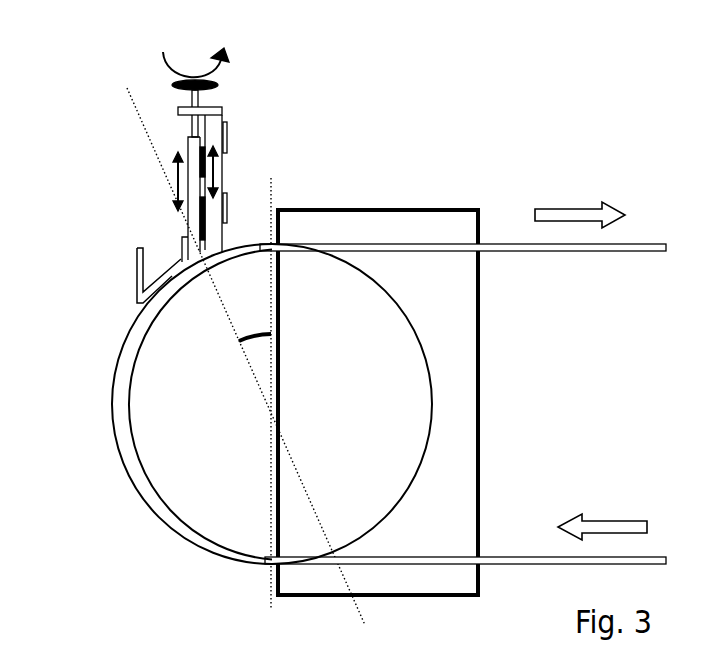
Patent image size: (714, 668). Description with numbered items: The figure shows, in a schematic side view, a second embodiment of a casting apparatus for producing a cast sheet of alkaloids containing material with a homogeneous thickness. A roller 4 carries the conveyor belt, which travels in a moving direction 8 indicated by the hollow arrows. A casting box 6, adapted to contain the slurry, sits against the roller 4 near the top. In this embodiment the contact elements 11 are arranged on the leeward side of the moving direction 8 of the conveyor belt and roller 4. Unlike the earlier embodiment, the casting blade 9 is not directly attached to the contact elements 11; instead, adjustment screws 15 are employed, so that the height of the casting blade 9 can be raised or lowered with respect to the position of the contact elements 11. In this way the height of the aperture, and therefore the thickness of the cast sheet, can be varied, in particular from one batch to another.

The roller 4 is at (172, 470).
The casting box 6 is at (127, 268).
The moving direction 8 is at (582, 202).
The casting blade 9 is at (195, 152).
The contact elements 11 is at (215, 132).
The adjustment screws 15 is at (168, 90).